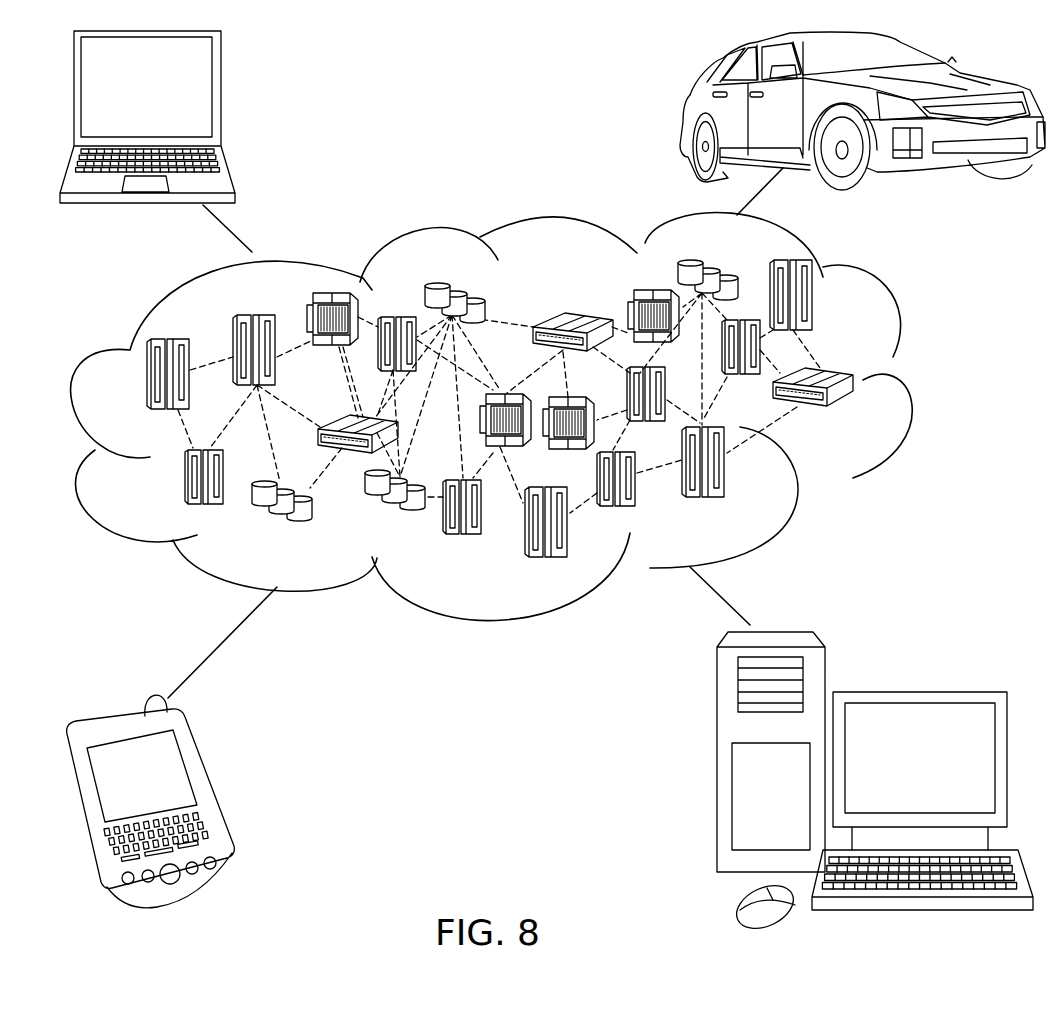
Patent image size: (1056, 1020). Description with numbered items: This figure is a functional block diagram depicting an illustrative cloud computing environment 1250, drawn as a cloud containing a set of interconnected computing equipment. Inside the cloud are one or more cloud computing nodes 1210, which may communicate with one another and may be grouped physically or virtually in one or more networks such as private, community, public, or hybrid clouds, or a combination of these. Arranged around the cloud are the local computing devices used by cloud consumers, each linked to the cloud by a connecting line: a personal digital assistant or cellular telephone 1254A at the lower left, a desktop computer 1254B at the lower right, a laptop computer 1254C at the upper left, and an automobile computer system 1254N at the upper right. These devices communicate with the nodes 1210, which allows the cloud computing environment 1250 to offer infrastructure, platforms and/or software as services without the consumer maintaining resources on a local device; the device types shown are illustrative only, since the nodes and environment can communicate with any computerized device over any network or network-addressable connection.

The laptop computer 1254C is at (221, 95).
The automobile computer system 1254N is at (683, 112).
The personal digital assistant (PDA) or cellular telephone 1254A is at (212, 790).
The desktop computer 1254B is at (917, 692).
The cloud computing environment 1250 is at (540, 433).
The cloud computing nodes 1210 is at (866, 420).